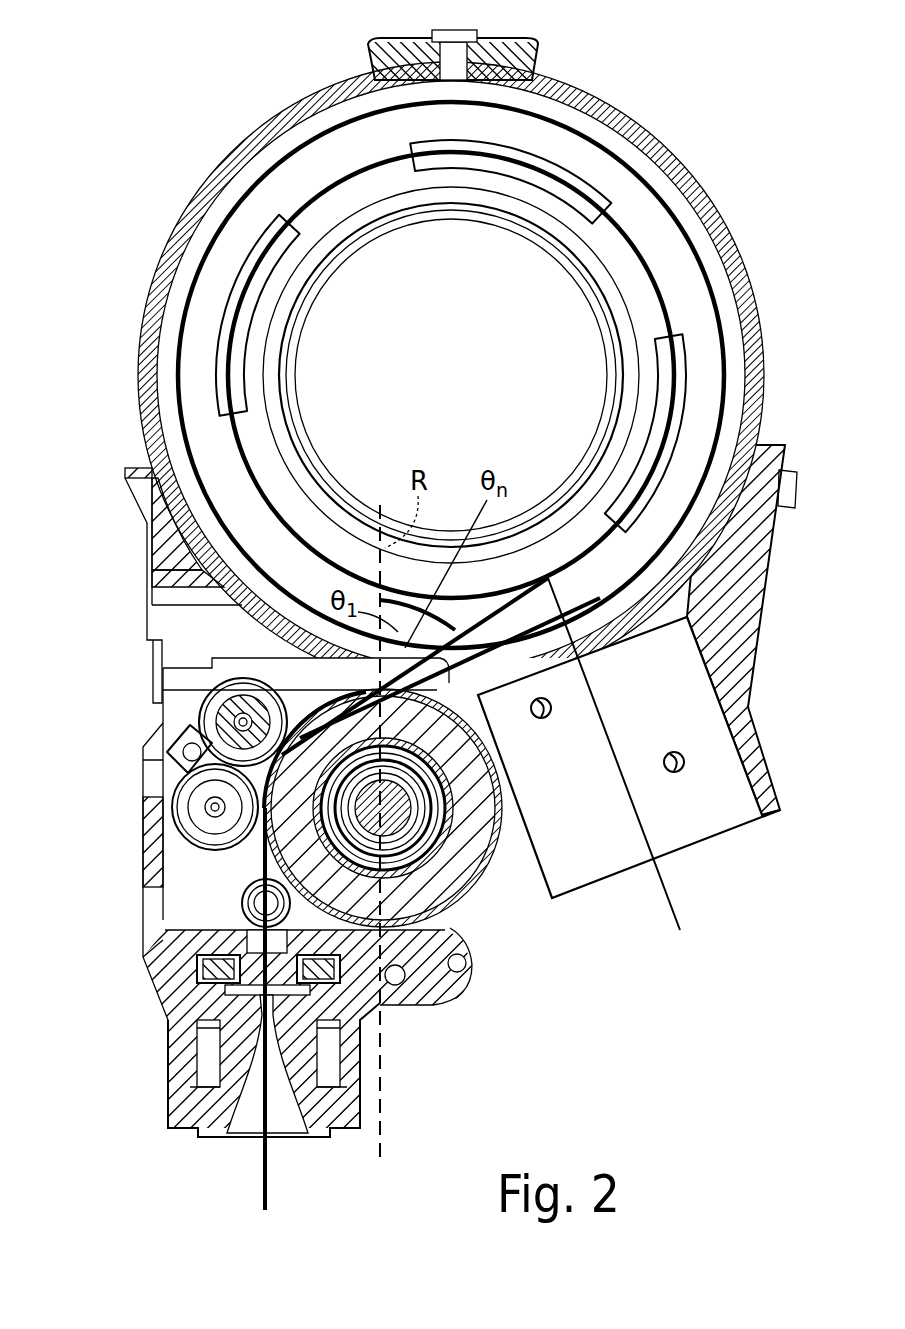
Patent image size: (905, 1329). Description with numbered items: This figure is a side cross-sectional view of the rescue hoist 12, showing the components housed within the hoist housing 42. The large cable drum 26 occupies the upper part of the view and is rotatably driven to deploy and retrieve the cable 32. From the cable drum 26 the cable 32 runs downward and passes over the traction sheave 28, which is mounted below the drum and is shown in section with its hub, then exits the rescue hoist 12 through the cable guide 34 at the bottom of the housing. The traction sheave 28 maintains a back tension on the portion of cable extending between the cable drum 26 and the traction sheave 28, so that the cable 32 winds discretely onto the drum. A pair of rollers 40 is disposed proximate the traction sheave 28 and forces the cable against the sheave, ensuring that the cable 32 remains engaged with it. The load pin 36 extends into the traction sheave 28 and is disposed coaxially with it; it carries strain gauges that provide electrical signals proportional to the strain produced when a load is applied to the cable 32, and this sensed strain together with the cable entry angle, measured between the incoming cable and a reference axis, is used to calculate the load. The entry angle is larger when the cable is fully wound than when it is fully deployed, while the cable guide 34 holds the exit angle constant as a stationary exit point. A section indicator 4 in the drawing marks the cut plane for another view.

The rescue hoist 12 is at (728, 103).
The cable drum 26 is at (272, 127).
The rollers 40 is at (226, 702).
The load pin 36 is at (412, 850).
The traction sheave 28 is at (430, 925).
The hoist housing 42 is at (432, 992).
The cable guide 34 is at (212, 1135).
The cable 32 is at (268, 1160).
The section line 4- 4 is at (380, 698).